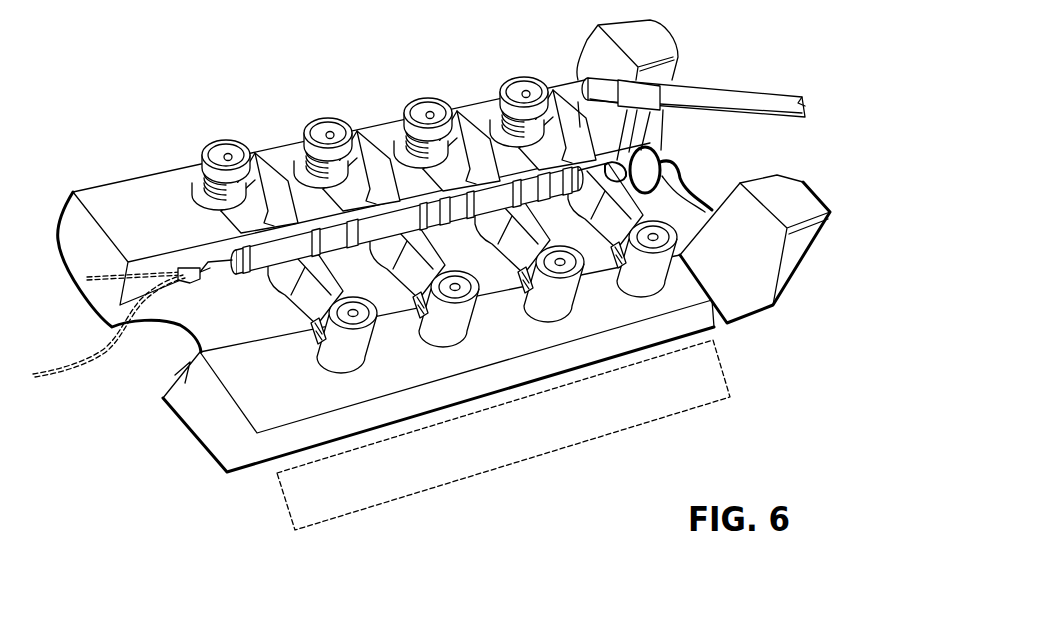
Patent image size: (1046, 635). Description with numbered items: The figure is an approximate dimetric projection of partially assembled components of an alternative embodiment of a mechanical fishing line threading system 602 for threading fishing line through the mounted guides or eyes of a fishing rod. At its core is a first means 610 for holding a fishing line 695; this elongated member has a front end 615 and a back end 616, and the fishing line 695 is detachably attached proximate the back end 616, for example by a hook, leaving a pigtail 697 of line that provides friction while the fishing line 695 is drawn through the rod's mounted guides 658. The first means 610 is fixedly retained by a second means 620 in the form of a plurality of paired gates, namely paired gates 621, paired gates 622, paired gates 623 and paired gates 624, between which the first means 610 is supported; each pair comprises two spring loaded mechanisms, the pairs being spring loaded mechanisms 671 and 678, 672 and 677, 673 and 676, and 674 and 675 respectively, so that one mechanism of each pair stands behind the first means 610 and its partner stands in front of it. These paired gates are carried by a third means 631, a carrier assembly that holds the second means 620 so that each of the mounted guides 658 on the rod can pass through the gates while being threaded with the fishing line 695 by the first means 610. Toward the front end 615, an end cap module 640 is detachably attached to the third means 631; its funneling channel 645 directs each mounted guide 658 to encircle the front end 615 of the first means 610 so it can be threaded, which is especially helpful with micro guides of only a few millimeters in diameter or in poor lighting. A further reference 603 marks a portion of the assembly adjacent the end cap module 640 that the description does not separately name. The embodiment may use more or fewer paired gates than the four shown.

The mechanical fishing line threading system 602 is at (386, 295).
The second module 603 is at (755, 268).
The first means for holding a fishing line 610 is at (405, 210).
The front end 615 is at (609, 172).
The back end 616 is at (233, 262).
The second means (plurality of paired gates) 620 is at (674, 388).
The paired gates 621 is at (628, 268).
The paired gates 622 is at (541, 289).
The paired gates 623 is at (433, 315).
The paired gates 624 is at (350, 345).
The third means for holding the second means 631 is at (257, 400).
The end cap module 640 is at (717, 264).
The funneling channel 645 is at (672, 173).
The mounted guides 658 is at (660, 157).
The spring loaded mechanism 671 is at (488, 127).
The spring loaded mechanism 672 is at (391, 132).
The spring loaded mechanism 673 is at (278, 158).
The spring loaded mechanism 674 is at (200, 173).
The spring loaded mechanism 675 is at (304, 369).
The spring loaded mechanism 676 is at (424, 338).
The spring loaded mechanism 677 is at (529, 312).
The spring loaded mechanism 678 is at (622, 290).
The fishing line 695 is at (103, 352).
The pigtail 697 is at (98, 282).